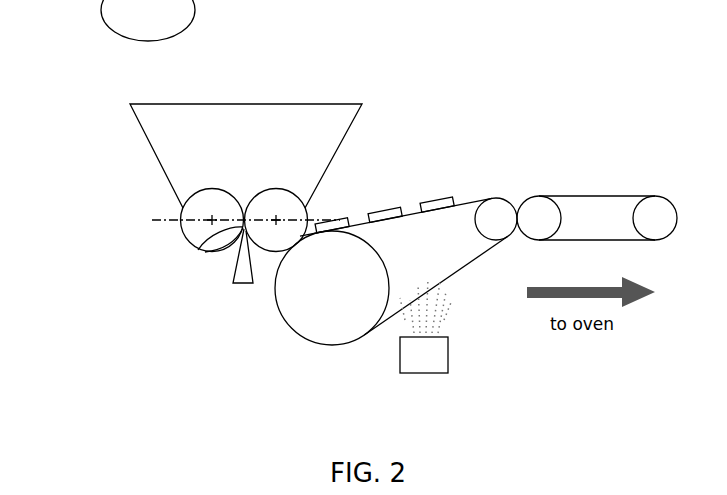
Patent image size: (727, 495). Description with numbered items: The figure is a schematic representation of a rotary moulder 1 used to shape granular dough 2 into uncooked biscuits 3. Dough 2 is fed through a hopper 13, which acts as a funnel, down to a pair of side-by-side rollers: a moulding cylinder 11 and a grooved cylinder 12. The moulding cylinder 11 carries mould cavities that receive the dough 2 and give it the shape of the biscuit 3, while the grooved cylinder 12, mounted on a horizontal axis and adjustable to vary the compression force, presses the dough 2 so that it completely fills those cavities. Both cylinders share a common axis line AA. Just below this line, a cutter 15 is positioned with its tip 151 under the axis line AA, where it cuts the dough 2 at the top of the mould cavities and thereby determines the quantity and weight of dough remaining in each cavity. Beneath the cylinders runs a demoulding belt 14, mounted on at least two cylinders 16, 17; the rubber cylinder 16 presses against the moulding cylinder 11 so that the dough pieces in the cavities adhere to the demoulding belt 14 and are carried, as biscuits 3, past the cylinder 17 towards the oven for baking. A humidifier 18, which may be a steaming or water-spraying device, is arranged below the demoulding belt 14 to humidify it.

The rotary moulder 1 is at (110, 212).
The dough 2 is at (251, 82).
The biscuit 3 is at (438, 199).
The moulding cylinder 11 is at (280, 188).
The grooved cylinder 12 is at (215, 188).
The hopper 13 is at (155, 164).
The demoulding belt 14 is at (464, 268).
The cutter 15 is at (234, 285).
The rubber cylinder 16 is at (332, 346).
The cylinder 17 is at (490, 201).
The humidifier 18 is at (423, 374).
The tip 151 is at (198, 250).
The axis line AA is at (166, 221).